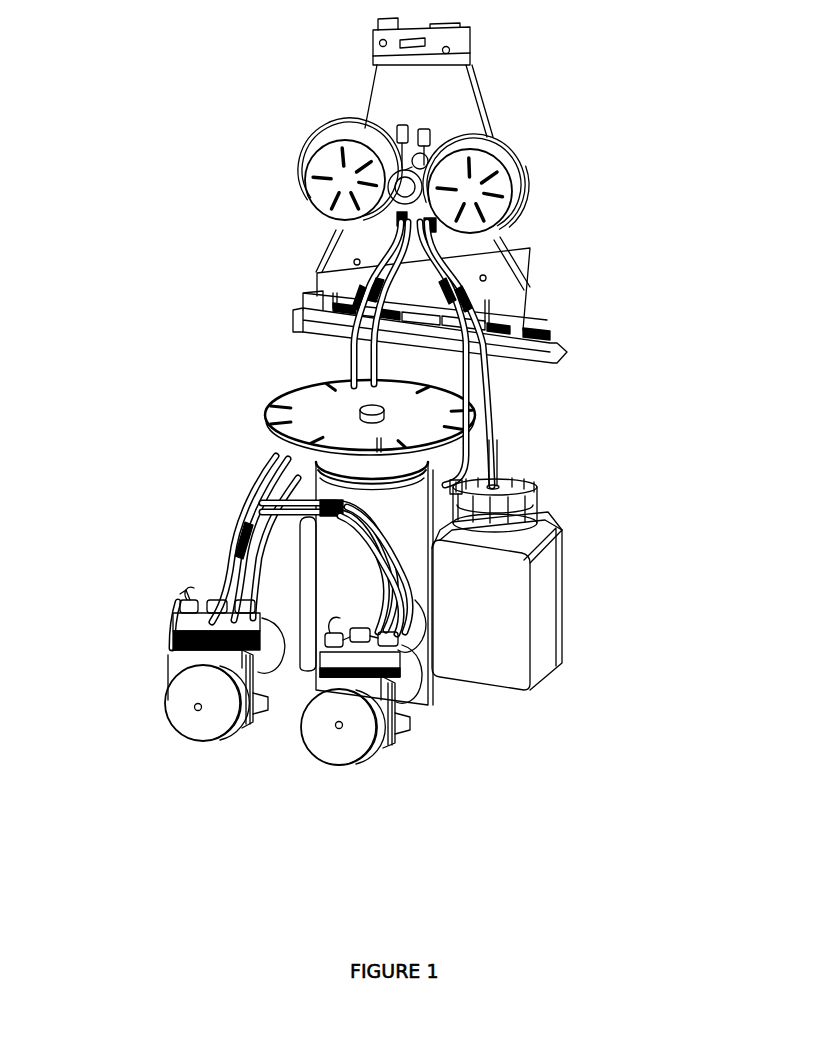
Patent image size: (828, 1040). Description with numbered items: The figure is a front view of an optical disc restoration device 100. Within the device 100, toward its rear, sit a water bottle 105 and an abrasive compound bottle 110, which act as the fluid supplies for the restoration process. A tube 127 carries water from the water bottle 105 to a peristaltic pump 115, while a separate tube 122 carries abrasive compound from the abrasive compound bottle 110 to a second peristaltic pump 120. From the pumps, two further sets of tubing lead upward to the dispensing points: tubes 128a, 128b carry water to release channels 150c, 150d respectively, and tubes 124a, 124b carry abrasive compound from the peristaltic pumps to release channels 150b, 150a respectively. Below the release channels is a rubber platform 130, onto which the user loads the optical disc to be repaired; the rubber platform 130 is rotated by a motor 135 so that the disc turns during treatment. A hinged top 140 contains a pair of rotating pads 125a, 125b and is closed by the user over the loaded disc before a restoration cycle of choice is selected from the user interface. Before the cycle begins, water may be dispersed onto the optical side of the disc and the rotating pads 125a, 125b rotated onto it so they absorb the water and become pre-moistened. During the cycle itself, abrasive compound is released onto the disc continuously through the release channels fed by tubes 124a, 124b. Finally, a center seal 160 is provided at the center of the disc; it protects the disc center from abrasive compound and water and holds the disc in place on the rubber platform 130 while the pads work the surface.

The device 100 is at (596, 845).
The water bottle 105 is at (248, 516).
The abrasive compound bottle 110 is at (547, 597).
The peristaltic pump 115 is at (205, 723).
The peristaltic pump 120 is at (353, 742).
The tube 122 is at (412, 710).
The tube 124a is at (512, 262).
The tube 124b is at (298, 368).
The rotating pad 125a is at (522, 184).
The rotating pad 125b is at (305, 162).
The tube 127 is at (233, 568).
The tube 128a is at (302, 275).
The tube 128b is at (533, 300).
The rubber platform 130 is at (520, 443).
The motor 135 is at (540, 482).
The hinged top 140 is at (535, 305).
The release channel 150a is at (360, 108).
The release channel 150b is at (522, 197).
The release channel 150c is at (492, 140).
The release channel 150d is at (338, 250).
The center seal 160 is at (300, 160).